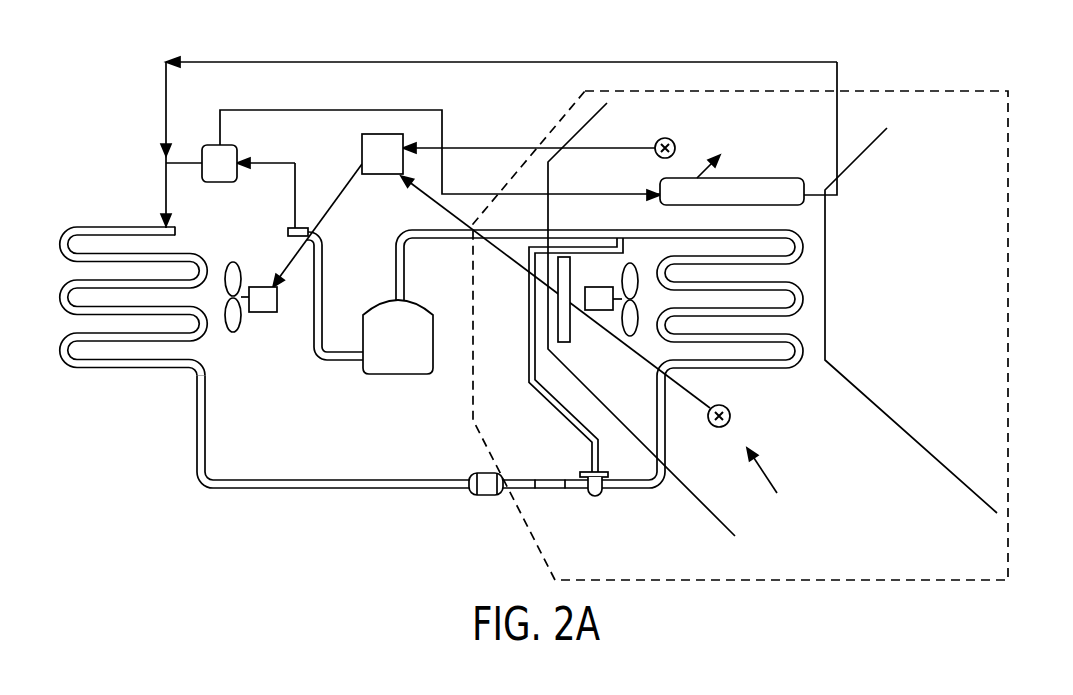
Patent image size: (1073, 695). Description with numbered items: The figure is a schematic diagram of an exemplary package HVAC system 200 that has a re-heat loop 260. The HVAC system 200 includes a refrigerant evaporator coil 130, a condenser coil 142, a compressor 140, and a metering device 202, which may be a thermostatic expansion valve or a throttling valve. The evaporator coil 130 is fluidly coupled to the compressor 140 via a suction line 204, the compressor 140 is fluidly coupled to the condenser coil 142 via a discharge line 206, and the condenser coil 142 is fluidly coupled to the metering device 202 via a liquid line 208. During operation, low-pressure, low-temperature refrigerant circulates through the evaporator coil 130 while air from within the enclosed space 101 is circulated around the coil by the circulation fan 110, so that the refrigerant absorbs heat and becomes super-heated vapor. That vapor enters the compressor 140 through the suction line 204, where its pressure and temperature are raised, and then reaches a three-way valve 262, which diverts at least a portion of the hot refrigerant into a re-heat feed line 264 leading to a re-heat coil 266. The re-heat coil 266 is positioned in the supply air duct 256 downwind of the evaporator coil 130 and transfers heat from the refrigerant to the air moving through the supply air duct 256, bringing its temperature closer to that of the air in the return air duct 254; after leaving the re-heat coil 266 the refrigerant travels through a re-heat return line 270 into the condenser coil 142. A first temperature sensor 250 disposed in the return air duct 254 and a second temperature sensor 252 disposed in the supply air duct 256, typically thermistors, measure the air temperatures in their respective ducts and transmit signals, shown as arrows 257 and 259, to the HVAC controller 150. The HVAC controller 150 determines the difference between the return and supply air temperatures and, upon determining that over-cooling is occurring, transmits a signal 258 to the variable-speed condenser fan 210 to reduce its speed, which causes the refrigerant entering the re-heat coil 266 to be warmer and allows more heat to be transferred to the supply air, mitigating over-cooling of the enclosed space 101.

The package HVAC system 200 is at (116, 192).
The enclosed space 101 is at (1010, 345).
The circulation fan 110 is at (600, 303).
The refrigerant evaporator coil 130 is at (776, 369).
The compressor 140 is at (392, 377).
The condenser coil 142 is at (122, 371).
The HVAC controller 150 is at (362, 140).
The metering device 202 is at (597, 498).
The suction line 204 is at (427, 240).
The discharge line 206 is at (318, 237).
The liquid line 208 is at (322, 491).
The variable-speed condenser fan 210 is at (267, 305).
The first temperature sensor 250 is at (719, 428).
The second temperature sensor 252 is at (676, 143).
The return air duct 254 is at (710, 513).
The supply air duct 256 is at (857, 160).
The signal from first temperature sensor 257 is at (515, 265).
The signal to condenser fan 258 is at (330, 200).
The signal from second temperature sensor 259 is at (485, 148).
The re-heat loop 260 is at (838, 80).
The three-way valve 262 is at (192, 142).
The re-heat feed line 264 is at (320, 110).
The re-heat coil 266 is at (799, 214).
The re-heat return line 270 is at (512, 62).